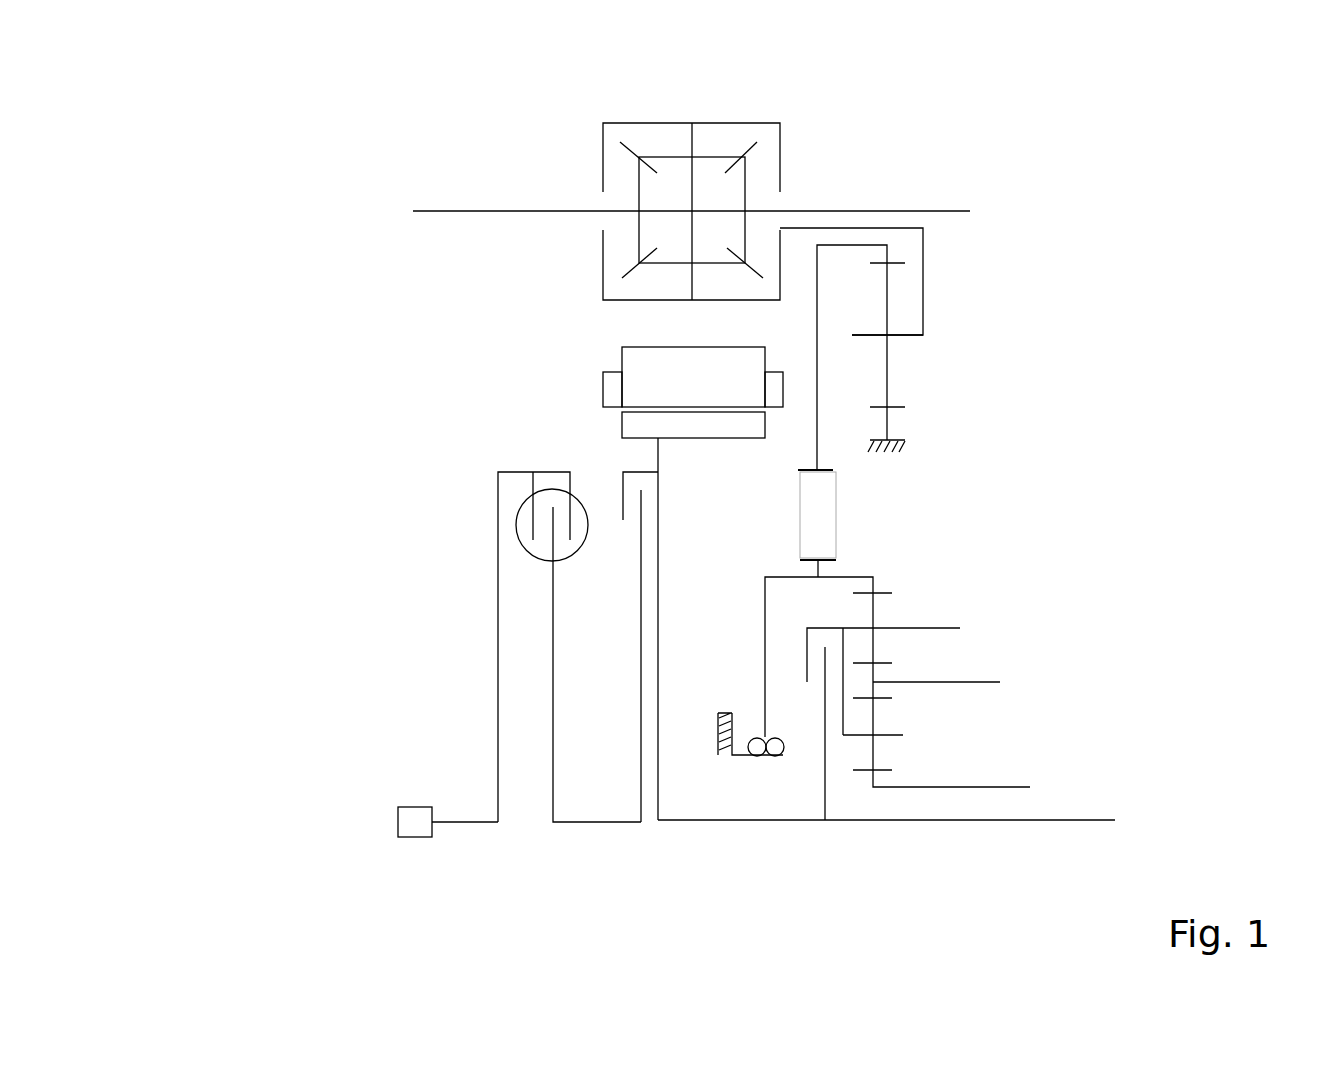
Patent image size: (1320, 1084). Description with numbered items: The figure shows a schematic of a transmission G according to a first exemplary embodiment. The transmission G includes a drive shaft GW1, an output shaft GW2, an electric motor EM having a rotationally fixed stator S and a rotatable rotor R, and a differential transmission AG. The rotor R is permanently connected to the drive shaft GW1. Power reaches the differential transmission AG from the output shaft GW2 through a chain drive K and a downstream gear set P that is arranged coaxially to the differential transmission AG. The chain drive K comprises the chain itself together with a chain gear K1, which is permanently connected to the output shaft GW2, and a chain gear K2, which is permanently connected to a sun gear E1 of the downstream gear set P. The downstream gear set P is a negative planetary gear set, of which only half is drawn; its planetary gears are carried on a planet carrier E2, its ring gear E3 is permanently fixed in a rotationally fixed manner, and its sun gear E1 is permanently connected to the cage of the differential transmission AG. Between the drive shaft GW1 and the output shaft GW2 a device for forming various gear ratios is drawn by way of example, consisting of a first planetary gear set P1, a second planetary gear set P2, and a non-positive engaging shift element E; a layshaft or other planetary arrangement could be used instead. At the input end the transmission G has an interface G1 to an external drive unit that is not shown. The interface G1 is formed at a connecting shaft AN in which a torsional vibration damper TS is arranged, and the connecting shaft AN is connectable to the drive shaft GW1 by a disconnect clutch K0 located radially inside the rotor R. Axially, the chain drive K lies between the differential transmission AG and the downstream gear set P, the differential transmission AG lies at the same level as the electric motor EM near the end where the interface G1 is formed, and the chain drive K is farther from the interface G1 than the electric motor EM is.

The transmission G is at (348, 183).
The differential transmission AG is at (808, 148).
The sun gear E1 is at (905, 263).
The planet carrier E2 is at (905, 335).
The downstream gear set P is at (945, 322).
The ring gear E3 is at (905, 407).
The chain gear K2 is at (833, 470).
The chain drive K is at (838, 512).
The chain gear K1 is at (835, 568).
The output shaft GW2 is at (873, 578).
The first planetary gear set P1 is at (900, 647).
The second planetary gear set P2 is at (900, 752).
The electric motor EM is at (448, 563).
The stator S is at (587, 383).
The rotor R is at (603, 428).
The interface G1 is at (393, 826).
The connecting shaft AN is at (455, 823).
The torsional vibration damper TS is at (531, 578).
The disconnect clutch K0 is at (629, 535).
The drive shaft GW1 is at (715, 822).
The shift element E is at (812, 703).